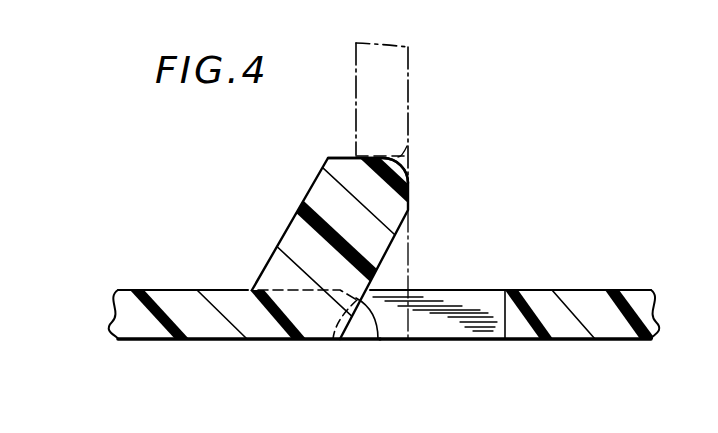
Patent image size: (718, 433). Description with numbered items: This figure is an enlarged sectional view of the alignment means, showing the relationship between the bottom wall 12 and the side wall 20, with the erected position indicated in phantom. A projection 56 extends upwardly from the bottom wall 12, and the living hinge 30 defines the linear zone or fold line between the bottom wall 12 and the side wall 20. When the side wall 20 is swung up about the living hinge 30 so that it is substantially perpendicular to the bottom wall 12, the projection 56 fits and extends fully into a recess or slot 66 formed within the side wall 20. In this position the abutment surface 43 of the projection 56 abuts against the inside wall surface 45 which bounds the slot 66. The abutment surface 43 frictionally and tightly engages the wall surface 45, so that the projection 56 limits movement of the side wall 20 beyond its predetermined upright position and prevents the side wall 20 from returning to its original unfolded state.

The bottom wall 12 is at (176, 302).
The side wall 20 is at (582, 308).
The projection 56 is at (320, 200).
The abutment surface 43 is at (333, 157).
The recess or slot 66 is at (412, 140).
The living hinge 30 is at (372, 289).
The inside wall surface 45 is at (505, 316).